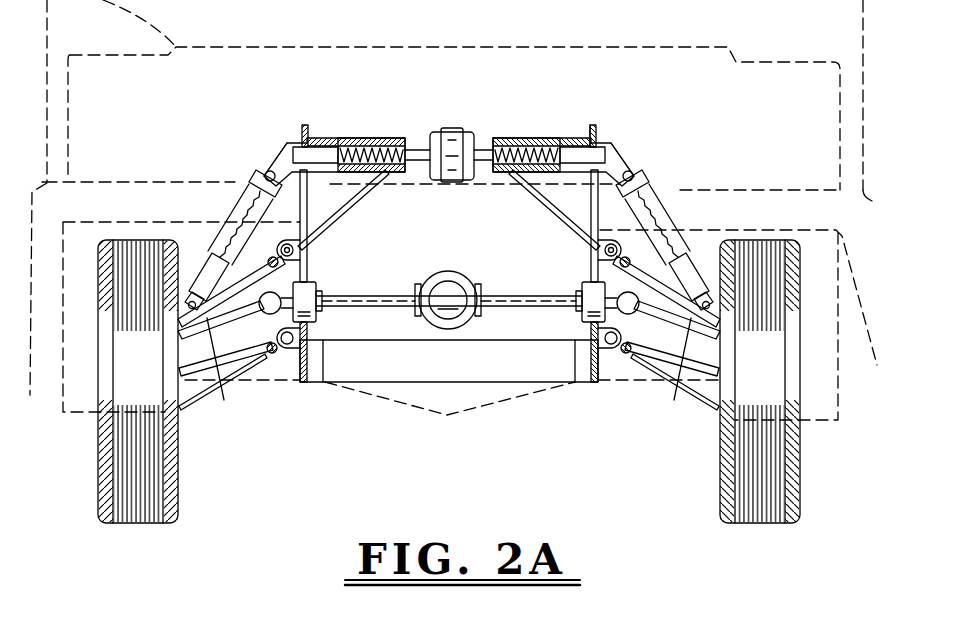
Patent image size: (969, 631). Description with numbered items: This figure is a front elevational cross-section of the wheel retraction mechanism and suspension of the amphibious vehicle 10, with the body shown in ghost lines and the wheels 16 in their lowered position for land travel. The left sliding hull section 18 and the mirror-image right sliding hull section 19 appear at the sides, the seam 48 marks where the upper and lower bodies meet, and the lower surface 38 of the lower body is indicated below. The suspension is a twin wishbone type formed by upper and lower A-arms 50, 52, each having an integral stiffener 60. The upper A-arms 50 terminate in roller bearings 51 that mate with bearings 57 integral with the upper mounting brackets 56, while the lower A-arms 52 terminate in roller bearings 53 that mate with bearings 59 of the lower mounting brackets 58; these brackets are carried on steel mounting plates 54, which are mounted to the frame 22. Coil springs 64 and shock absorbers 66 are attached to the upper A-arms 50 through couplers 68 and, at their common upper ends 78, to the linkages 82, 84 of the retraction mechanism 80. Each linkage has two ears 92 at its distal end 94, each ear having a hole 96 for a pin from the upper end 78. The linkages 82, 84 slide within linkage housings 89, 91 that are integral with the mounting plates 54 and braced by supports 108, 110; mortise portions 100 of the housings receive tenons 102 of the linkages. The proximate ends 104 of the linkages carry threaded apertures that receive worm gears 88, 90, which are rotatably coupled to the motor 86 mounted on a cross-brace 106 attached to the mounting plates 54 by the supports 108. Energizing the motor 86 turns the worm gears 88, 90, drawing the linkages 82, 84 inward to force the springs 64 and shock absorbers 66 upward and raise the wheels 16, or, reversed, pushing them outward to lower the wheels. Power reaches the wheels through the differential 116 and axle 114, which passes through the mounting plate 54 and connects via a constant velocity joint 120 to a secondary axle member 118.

The amphibious vehicle 10 is at (484, 390).
The wheels 16 is at (98, 465).
The left sliding hull section 18 is at (876, 358).
The right sliding hull section 19 is at (44, 400).
The frame 22 is at (323, 357).
The lower surface 38 is at (400, 405).
The seam 48 is at (885, 194).
The upper A-arms 50 is at (255, 360).
The roller bearings 51 is at (278, 250).
The lower A-arms 52 is at (211, 396).
The roller bearings 53 is at (308, 330).
The mounting plates 54 is at (312, 256).
The upper mounting brackets 56 is at (288, 241).
The bearings 57 is at (300, 247).
The lower mounting brackets 58 is at (290, 352).
The bearings 59 is at (279, 370).
The stiffener 60 is at (300, 265).
The coil springs 64 is at (242, 201).
The shock absorbers 66 is at (198, 278).
The couplers 68 is at (173, 316).
The common upper ends 78 is at (270, 165).
The retraction mechanism 80 is at (451, 118).
The linkage 82 is at (593, 142).
The linkage 84 is at (296, 143).
The motor 86 is at (443, 126).
The worm gear 88 is at (578, 140).
The linkage housing 89 is at (344, 138).
The worm gear 90 is at (371, 147).
The linkage housing 91 is at (520, 140).
The ears 92 is at (278, 158).
The distal end 94 is at (449, 146).
The hole 96 is at (266, 170).
The mortise portions 100 is at (388, 142).
The tenons 102 is at (315, 150).
The proximate ends 104 is at (448, 144).
The cross-brace 106 is at (453, 188).
The supports 108 is at (343, 200).
The supports 110 is at (400, 174).
The axle 114 is at (383, 296).
The differential 116 is at (448, 300).
The secondary axle member 118 is at (232, 375).
The constant velocity joint 120 is at (306, 286).